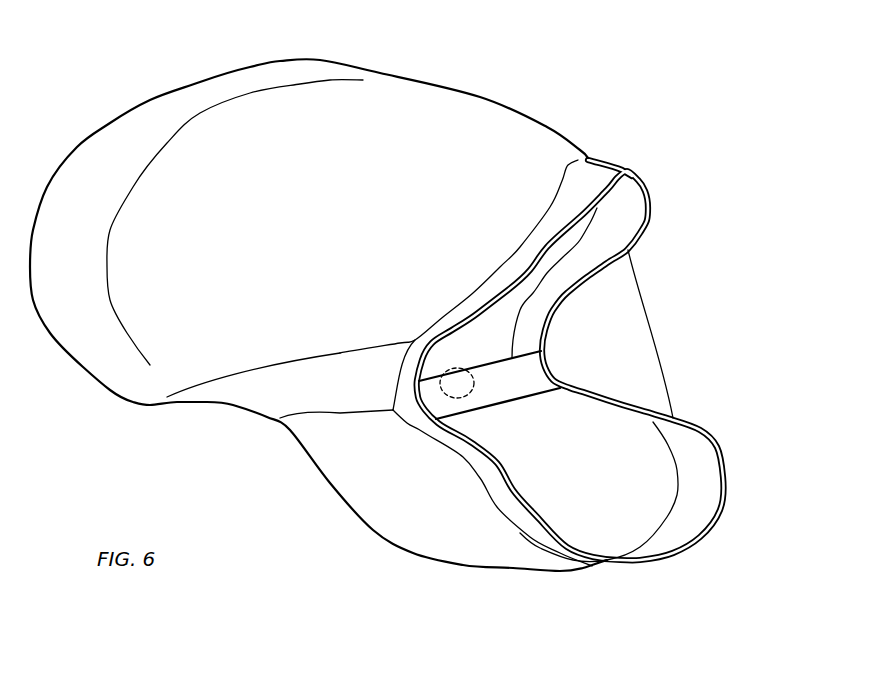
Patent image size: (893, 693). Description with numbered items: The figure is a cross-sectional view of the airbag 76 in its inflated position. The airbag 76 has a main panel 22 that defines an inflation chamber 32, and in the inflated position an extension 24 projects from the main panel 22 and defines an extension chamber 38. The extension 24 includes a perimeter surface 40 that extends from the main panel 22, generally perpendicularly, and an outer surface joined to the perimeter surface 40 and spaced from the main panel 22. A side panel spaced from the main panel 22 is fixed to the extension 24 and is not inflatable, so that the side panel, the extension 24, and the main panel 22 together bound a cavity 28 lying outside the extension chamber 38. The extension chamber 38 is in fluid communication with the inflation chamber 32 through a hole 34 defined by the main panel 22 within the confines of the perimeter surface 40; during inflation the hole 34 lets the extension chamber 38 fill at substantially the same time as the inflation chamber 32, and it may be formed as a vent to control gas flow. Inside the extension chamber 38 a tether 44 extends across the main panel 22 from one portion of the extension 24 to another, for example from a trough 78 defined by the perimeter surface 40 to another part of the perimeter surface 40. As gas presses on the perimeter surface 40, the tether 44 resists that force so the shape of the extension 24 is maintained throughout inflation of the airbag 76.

The airbag 76 is at (115, 111).
The main panel 22 is at (198, 100).
The inflation chamber 32 is at (280, 117).
The hole 34 is at (462, 368).
The tether 44 is at (487, 410).
The cavity 28 is at (622, 378).
The extension chamber 38 is at (599, 485).
The perimeter surface 40 is at (700, 430).
The trough 78 is at (545, 370).
The extension 24 is at (537, 533).